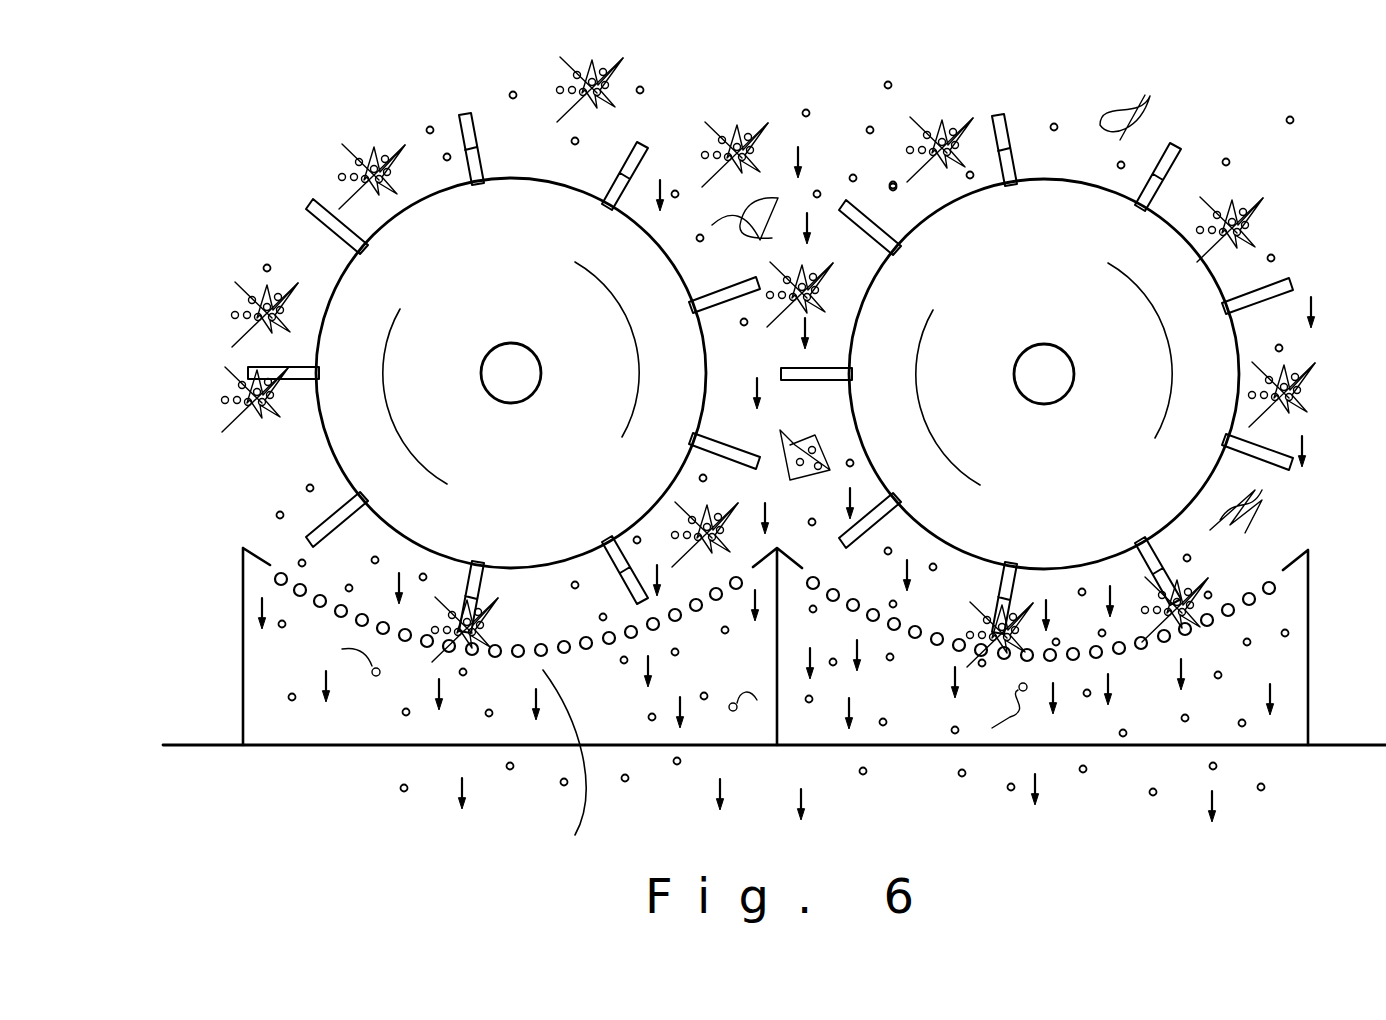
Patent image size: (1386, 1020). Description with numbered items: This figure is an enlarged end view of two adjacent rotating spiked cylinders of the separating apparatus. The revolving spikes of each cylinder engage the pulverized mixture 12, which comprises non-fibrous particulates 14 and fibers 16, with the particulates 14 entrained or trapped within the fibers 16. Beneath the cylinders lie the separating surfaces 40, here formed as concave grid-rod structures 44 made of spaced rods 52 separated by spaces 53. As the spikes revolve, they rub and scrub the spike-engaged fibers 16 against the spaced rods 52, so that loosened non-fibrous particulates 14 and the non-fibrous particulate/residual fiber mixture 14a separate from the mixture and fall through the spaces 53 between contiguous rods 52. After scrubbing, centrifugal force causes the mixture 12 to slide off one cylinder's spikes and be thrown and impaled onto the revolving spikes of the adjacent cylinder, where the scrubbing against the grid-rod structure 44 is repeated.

The pulverized mixture 12 is at (774, 773).
The non-fibrous particulates 14 is at (890, 181).
The non-fibrous particulate/residual fiber mixture 14a is at (374, 677).
The fibers 16 is at (243, 373).
The separating surfaces 40 is at (500, 664).
The concave grid-rod structure 44 is at (561, 768).
The spaced rods 52 is at (581, 650).
The spaces 53 is at (313, 608).